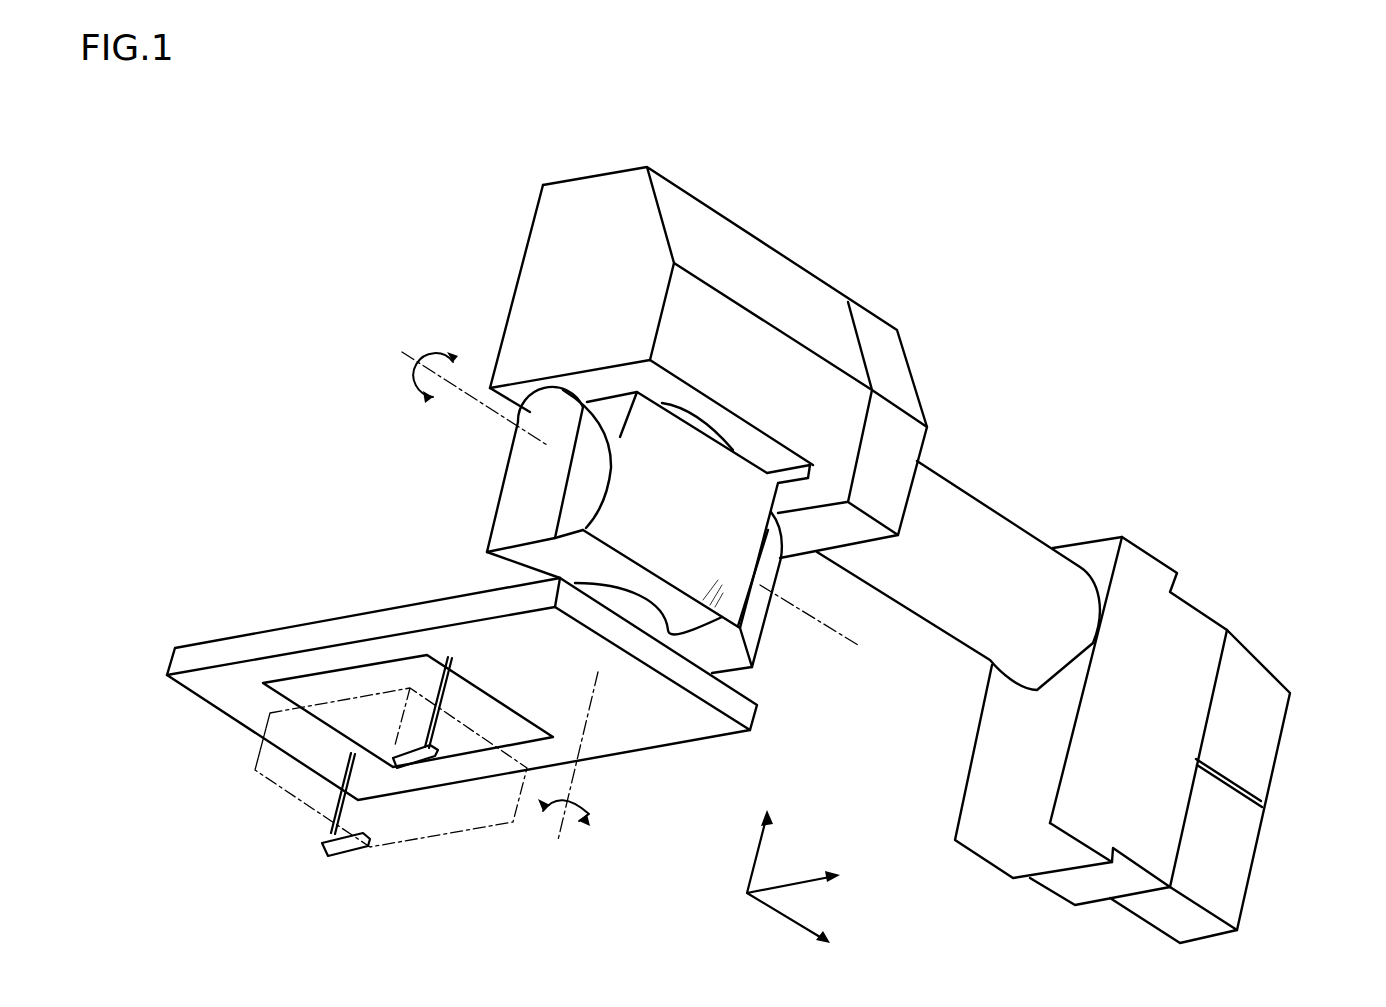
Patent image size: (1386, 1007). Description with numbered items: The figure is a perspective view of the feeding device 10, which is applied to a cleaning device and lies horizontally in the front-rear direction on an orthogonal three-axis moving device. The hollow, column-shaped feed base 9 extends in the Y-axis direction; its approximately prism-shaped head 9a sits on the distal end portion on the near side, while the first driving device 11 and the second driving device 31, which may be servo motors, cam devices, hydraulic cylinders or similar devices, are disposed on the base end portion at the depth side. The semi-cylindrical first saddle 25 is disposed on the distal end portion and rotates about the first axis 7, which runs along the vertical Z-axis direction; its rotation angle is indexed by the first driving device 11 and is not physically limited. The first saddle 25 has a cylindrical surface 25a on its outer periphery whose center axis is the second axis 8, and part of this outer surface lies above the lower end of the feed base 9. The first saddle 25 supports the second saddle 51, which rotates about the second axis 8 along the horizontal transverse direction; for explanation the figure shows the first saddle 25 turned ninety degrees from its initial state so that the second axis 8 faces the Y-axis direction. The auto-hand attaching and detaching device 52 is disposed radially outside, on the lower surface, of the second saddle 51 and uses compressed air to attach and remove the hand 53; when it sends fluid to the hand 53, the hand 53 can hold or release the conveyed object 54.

The feeding device 10 is at (1320, 179).
The head 9a is at (798, 264).
The feed base 9 is at (935, 472).
The first driving device 11 is at (1268, 672).
The second driving device 31 is at (1250, 853).
The first saddle 25 is at (780, 558).
The cylindrical surface 25a is at (777, 597).
The second axis 8 is at (488, 408).
The second saddle 51 is at (500, 488).
The auto-hand attaching and detaching device 52 is at (587, 588).
The hand 53 is at (362, 612).
The conveyed object 54 is at (390, 840).
The first axis 7 is at (577, 775).